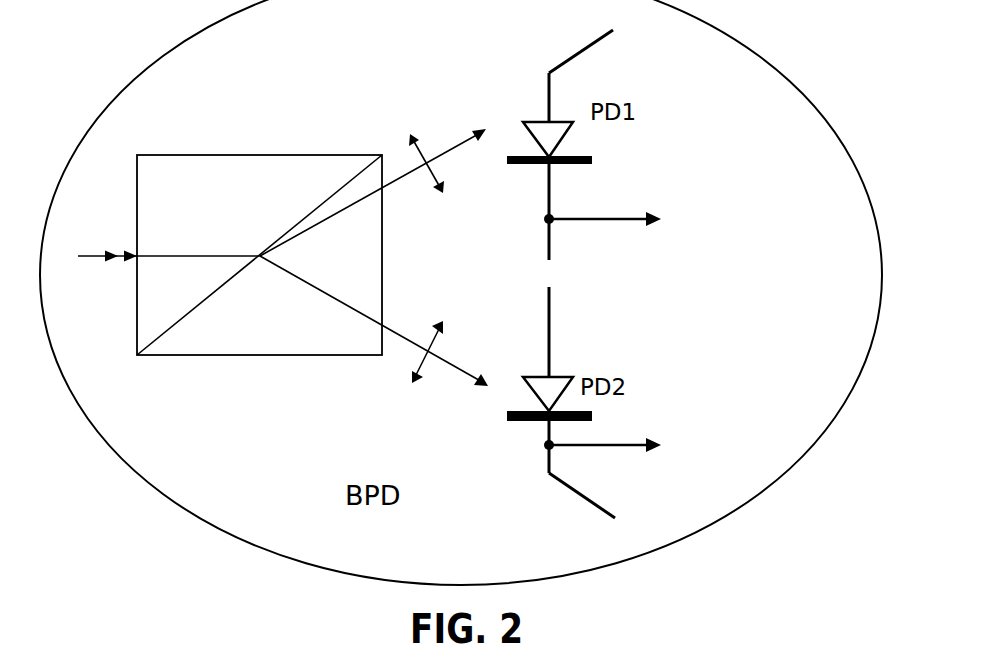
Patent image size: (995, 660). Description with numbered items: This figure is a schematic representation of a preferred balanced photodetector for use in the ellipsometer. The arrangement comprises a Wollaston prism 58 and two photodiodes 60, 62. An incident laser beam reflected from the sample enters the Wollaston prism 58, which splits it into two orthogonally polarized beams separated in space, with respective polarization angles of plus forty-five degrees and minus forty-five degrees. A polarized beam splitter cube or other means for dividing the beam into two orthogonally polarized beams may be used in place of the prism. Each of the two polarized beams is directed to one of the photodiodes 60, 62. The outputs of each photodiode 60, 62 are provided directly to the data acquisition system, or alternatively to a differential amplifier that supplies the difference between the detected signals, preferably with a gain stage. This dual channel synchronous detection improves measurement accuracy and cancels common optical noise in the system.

The Wollaston prism 58 is at (248, 357).
The photodiode 60 is at (601, 39).
The photodiode 62 is at (601, 505).